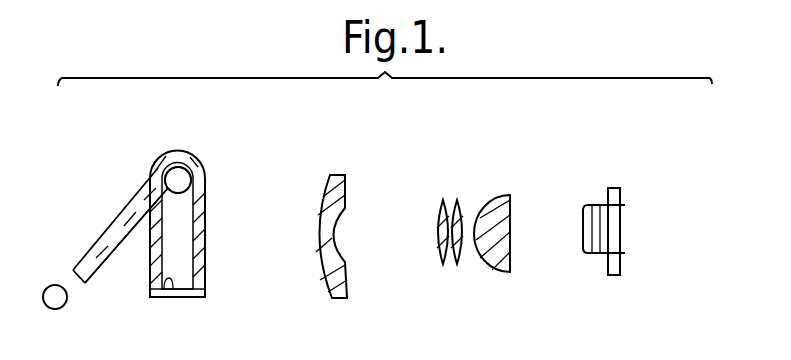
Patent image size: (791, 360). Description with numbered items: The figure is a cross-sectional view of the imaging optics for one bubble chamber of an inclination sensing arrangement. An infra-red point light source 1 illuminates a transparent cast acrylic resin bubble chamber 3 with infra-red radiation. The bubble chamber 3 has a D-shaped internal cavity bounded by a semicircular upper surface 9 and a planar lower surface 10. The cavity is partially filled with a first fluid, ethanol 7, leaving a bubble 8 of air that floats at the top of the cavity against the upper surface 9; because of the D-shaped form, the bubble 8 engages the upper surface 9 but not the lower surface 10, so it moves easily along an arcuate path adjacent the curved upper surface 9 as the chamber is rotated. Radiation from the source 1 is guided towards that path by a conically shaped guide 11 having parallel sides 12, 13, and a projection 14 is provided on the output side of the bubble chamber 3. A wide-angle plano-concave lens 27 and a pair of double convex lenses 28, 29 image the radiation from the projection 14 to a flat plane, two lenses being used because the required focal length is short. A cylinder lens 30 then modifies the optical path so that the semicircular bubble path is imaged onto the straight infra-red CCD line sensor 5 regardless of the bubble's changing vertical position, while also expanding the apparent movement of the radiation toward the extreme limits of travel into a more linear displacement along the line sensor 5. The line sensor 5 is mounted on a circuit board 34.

The infra-red point light source 1 is at (43, 296).
The bubble chamber 3 is at (156, 146).
The infra-red CCD line sensor 5 is at (586, 206).
The ethanol 7 is at (183, 255).
The bubble 8 is at (192, 162).
The semicircular upper surface 9 is at (166, 177).
The planar lower surface 10 is at (156, 297).
The conically shaped guide 11 is at (70, 251).
The parallel side 12 is at (102, 243).
The parallel side 13 is at (152, 212).
The projection 14 is at (206, 184).
The wide-angle plano-concave lens 27 is at (340, 170).
The double convex lens 28 is at (437, 212).
The double convex lens 29 is at (456, 208).
The cylinder lens 30 is at (500, 198).
The circuit board 34 is at (624, 230).